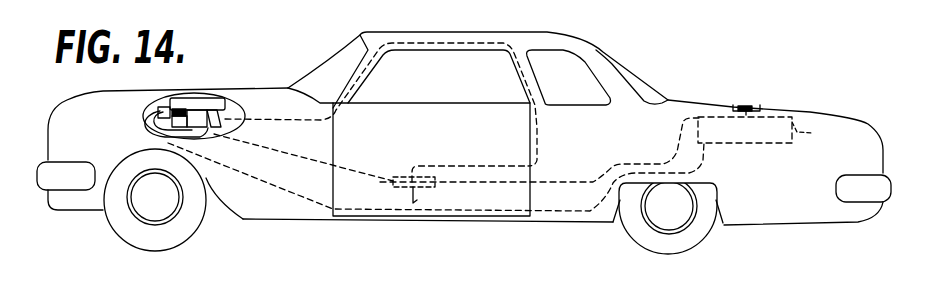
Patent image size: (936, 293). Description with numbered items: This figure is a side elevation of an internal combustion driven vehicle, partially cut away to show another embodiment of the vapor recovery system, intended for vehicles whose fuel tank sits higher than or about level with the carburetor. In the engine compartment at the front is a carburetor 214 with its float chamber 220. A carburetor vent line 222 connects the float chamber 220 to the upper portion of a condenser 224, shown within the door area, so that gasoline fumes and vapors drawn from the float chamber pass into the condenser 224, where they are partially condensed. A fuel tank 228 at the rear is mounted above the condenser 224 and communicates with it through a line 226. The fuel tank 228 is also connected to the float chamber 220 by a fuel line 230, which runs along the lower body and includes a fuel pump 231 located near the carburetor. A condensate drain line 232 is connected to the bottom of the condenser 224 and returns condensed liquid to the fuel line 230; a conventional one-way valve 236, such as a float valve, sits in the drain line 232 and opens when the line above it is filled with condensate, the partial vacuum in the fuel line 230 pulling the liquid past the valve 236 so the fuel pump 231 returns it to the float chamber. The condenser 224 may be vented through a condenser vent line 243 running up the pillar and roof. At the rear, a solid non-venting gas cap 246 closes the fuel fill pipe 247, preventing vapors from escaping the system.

The carburetor 214 is at (199, 113).
The fuel pump 231 is at (158, 111).
The float chamber 220 is at (160, 119).
The carburetor vent line 222 is at (272, 143).
The condenser 224 is at (400, 161).
The condensate drain line 232 is at (411, 191).
The one-way valve 236 is at (418, 197).
The fuel line 230 is at (482, 209).
The condenser vent line 243 is at (543, 152).
The line 226 is at (647, 148).
The fuel tank 228 is at (777, 136).
The gas cap 246 is at (744, 105).
The fuel fill pipe 247 is at (758, 110).